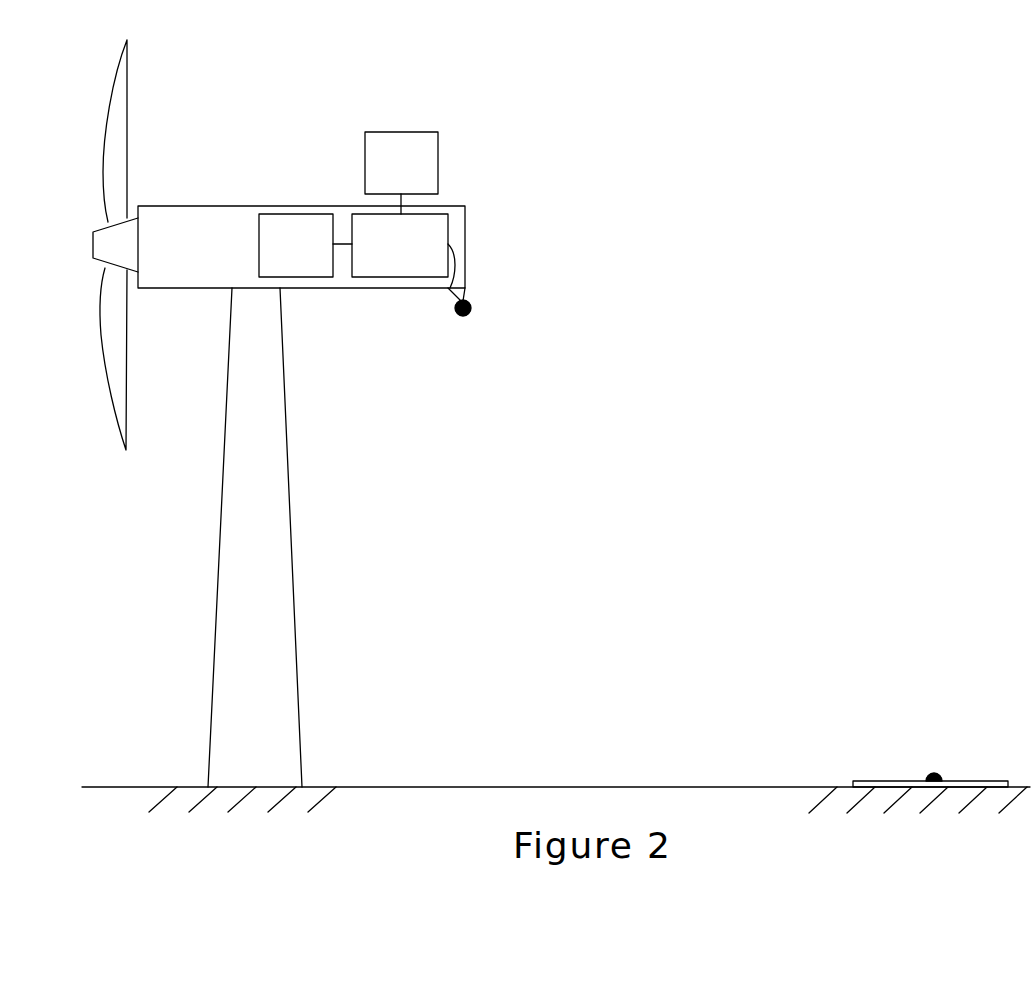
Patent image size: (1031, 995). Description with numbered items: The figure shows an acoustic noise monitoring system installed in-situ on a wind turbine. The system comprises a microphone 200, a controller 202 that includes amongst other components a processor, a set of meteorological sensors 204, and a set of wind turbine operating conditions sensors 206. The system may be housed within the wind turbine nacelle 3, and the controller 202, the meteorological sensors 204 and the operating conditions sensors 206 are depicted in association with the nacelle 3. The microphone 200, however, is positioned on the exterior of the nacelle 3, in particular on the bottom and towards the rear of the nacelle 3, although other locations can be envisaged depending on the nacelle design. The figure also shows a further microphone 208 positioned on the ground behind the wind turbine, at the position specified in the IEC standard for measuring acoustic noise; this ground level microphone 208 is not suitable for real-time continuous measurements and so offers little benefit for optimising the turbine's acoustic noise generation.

The wind turbine nacelle 3 is at (192, 250).
The microphone 200 is at (471, 311).
The controller 202 is at (381, 260).
The set of meteorological sensors 204 is at (382, 176).
The set of wind turbine operating conditions sensors 206 is at (277, 260).
The microphone 208 is at (938, 772).